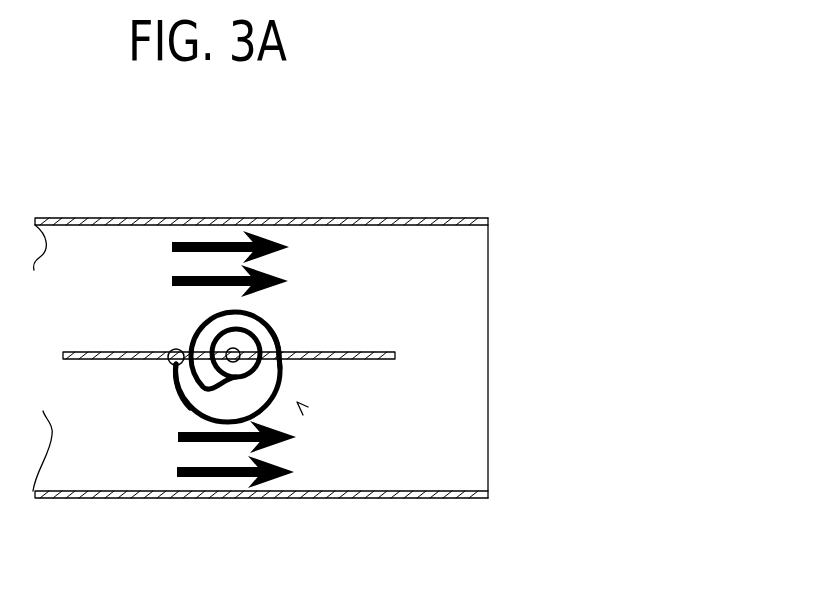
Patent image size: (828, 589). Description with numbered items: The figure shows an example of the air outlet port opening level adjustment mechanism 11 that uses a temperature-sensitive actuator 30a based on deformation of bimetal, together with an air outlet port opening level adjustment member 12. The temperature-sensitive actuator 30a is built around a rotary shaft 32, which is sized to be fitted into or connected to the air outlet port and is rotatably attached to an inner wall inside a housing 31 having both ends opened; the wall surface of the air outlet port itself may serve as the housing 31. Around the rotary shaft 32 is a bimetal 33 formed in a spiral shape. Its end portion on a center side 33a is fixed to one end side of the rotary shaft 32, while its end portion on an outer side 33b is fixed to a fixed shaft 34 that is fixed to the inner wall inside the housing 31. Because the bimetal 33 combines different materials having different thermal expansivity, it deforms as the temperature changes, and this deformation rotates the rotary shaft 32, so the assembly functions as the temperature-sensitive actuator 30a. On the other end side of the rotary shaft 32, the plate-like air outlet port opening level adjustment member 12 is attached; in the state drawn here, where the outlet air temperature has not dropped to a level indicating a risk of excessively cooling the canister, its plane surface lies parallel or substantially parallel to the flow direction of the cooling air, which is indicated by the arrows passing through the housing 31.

The air outlet port opening level adjustment mechanism 11 is at (342, 197).
The housing 31 is at (427, 222).
The air outlet port opening level adjustment member 12 is at (381, 355).
The rotary shaft 32 is at (240, 350).
The bimetal 33 is at (214, 338).
The end portion on a center side 33a is at (279, 366).
The end portion on an outer side 33b is at (173, 367).
The fixed shaft 34 is at (171, 363).
The temperature-sensitive actuator 30a is at (299, 404).